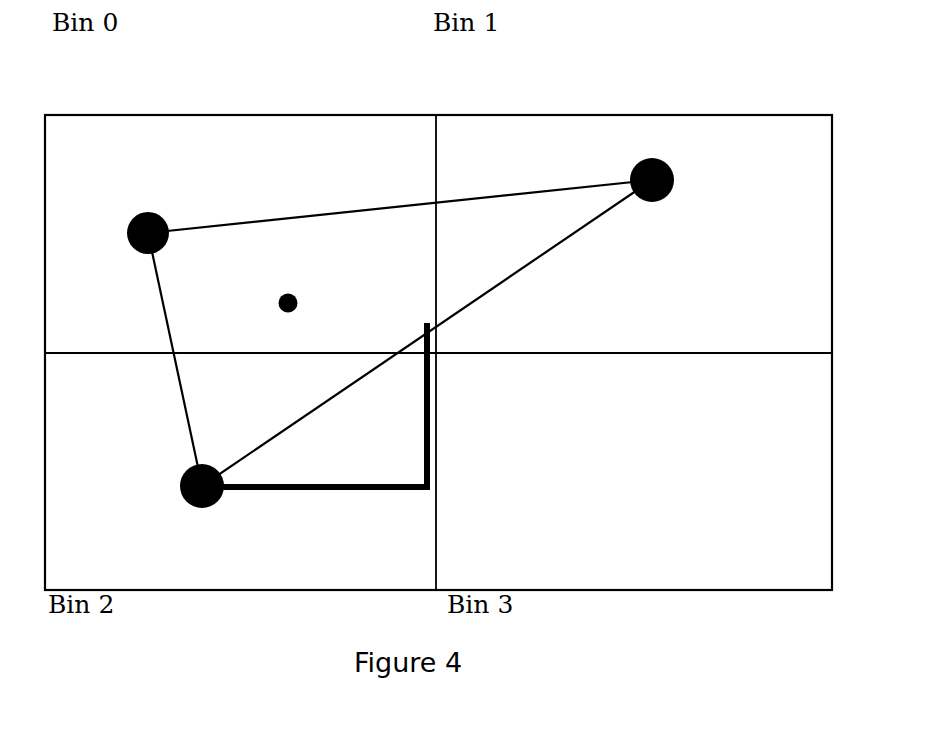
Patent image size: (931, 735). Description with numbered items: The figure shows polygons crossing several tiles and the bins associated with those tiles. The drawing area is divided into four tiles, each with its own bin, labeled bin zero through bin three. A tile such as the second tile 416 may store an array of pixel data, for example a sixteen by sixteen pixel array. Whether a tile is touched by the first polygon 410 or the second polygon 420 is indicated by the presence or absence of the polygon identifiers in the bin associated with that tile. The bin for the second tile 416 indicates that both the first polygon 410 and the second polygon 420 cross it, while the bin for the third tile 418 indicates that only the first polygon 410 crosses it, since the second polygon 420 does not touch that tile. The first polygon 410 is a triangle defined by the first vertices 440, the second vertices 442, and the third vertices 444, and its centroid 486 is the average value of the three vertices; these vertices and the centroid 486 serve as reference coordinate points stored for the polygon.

The first polygon 410 is at (163, 437).
The second tile 416 is at (220, 178).
The third tile 418 is at (697, 292).
The second polygon 420 is at (285, 522).
The first vertices 440 is at (120, 182).
The second vertices 442 is at (163, 522).
The third vertices 444 is at (718, 180).
The centroid 486 is at (330, 277).